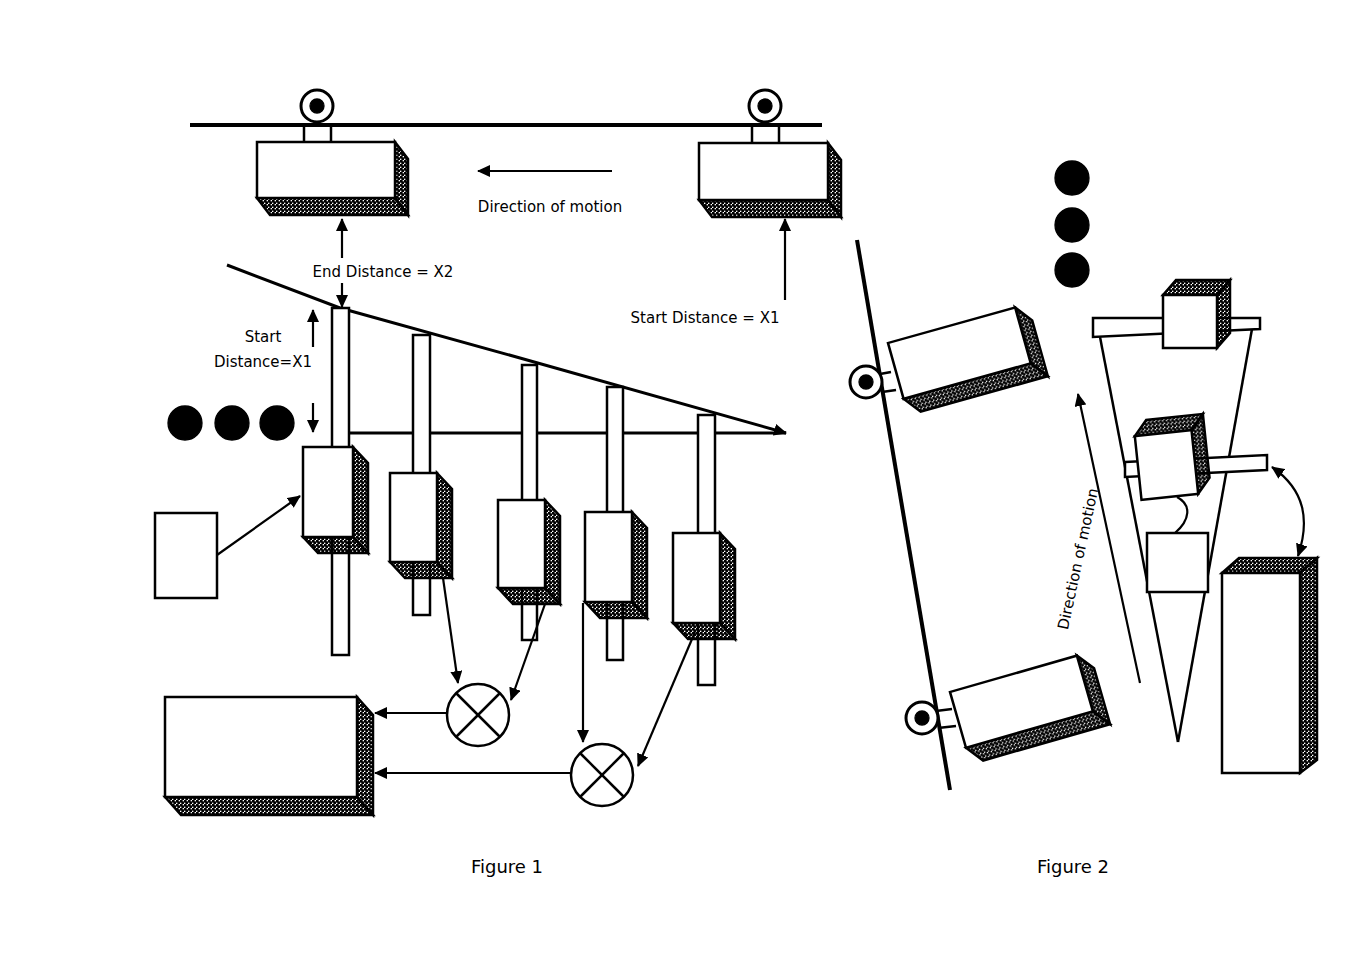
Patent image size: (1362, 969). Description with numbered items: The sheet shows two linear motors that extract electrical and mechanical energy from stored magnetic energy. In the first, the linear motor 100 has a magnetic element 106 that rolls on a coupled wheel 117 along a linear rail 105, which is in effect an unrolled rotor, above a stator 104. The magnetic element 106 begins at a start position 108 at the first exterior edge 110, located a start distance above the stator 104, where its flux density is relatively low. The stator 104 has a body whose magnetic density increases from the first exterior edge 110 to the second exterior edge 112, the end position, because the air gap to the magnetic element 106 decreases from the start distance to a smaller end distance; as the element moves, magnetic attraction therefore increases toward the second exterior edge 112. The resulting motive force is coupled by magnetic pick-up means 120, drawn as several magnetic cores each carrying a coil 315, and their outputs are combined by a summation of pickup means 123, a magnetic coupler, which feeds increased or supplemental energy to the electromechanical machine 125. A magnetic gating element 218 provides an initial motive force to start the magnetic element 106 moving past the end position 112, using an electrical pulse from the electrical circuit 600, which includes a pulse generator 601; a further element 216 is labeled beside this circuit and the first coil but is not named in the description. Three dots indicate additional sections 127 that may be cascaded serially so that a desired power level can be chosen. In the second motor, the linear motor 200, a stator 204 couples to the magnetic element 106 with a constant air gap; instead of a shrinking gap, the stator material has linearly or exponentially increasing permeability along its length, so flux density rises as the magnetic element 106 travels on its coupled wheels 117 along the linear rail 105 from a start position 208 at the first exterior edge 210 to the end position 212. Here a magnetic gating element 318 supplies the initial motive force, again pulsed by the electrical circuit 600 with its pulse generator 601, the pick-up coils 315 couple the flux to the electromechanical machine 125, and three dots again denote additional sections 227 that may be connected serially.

In FIG. 1, the linear motor 100 is at (240, 112).
In FIG. 1, the linear rail 105 is at (571, 120).
In FIG. 2, the linear rail 105 is at (924, 610).
In FIG. 1, the coupled wheel 117 is at (326, 92).
In FIG. 2, the coupled wheel 117 is at (860, 398).
In FIG. 1, the magnetic element 106 is at (549, 179).
In FIG. 2, the magnetic element 106 is at (999, 534).
In FIG. 1, the second exterior edge 112 is at (489, 328).
In FIG. 1, the additional sections 127 is at (188, 390).
In FIG. 1, the stator 104 is at (567, 400).
In FIG. 1, the first exterior edge 110 is at (778, 426).
In FIG. 1, the start position 108 is at (800, 515).
In FIG. 1, the magnetic pick-up means 120 is at (413, 625).
In FIG. 2, the magnetic pick-up means 120 is at (1254, 416).
In FIG. 1, the coil 315 is at (435, 478).
In FIG. 2, the coil 315 is at (1190, 413).
In FIG. 1, the electrical circuit 600 is at (227, 547).
In FIG. 2, the electrical circuit 600 is at (1177, 544).
In FIG. 1, the pulse generator 601 is at (186, 573).
In FIG. 2, the pulse generator 601 is at (1177, 578).
In FIG. 1, the coupling 216 is at (324, 550).
In FIG. 1, the magnetic gating element 218 is at (317, 590).
In FIG. 1, the electromechanical machine 125 is at (368, 756).
In FIG. 2, the electromechanical machine 125 is at (1269, 665).
In FIG. 1, the summation of pickup means 123 is at (509, 707).
In FIG. 2, the linear motor 200 is at (1008, 195).
In FIG. 2, the additional sections 227 is at (1055, 128).
In FIG. 2, the magnetic gating element 318 is at (1160, 270).
In FIG. 2, the stator 204 is at (1180, 530).
In FIG. 2, the first exterior edge 210 is at (1167, 719).
In FIG. 2, the end position 212 is at (1090, 322).
In FIG. 2, the start position 208 is at (1181, 748).